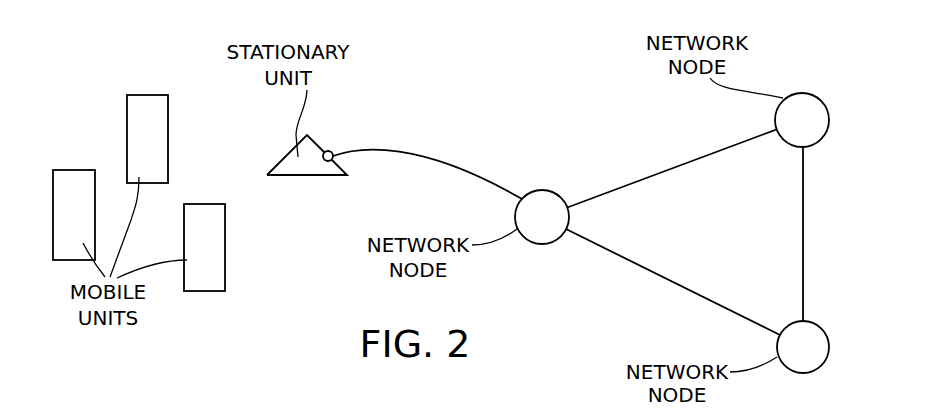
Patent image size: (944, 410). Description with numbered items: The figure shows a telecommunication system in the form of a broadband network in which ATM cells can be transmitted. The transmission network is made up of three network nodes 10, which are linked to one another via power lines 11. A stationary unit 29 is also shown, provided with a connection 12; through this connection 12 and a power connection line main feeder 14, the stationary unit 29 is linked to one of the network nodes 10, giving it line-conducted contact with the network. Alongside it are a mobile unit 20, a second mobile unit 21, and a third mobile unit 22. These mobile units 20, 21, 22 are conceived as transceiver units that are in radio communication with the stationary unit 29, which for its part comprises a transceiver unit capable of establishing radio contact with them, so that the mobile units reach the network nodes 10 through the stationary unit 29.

The network node 10 is at (529, 231).
The power line 11 is at (690, 157).
The connection 12 is at (330, 151).
The power connection line main feeder 14 is at (425, 148).
The mobile unit 20 is at (161, 150).
The second mobile unit 21 is at (86, 226).
The third mobile unit 22 is at (217, 255).
The stationary unit 29 is at (303, 168).